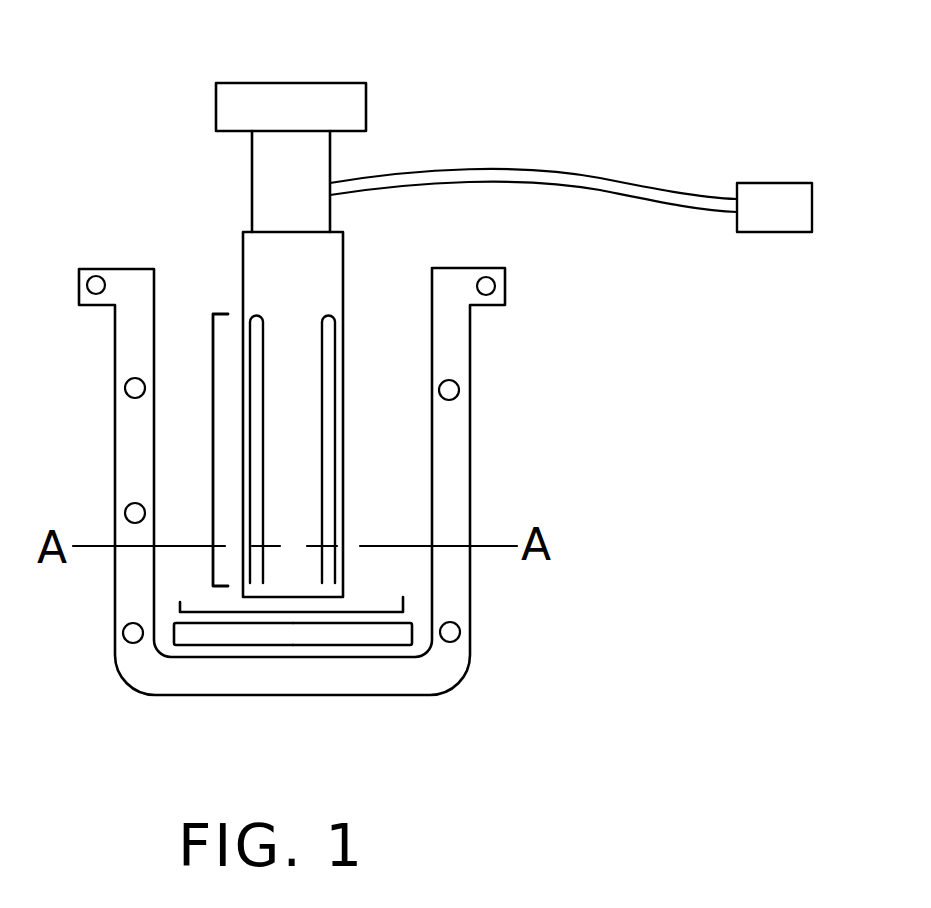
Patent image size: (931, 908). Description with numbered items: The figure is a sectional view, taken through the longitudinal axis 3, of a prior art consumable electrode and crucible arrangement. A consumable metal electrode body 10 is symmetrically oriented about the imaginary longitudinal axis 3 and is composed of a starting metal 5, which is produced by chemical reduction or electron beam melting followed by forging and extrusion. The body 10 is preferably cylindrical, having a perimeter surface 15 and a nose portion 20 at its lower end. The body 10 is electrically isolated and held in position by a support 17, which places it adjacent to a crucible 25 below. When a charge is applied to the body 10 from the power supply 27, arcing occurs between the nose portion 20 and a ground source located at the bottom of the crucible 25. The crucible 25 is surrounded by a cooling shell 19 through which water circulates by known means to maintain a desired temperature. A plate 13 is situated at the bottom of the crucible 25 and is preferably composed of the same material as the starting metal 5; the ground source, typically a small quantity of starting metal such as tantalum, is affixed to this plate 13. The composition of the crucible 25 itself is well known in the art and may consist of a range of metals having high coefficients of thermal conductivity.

The longitudinal axis 3 is at (293, 623).
The starting metal 5 is at (256, 246).
The consumable metal electrode body 10 is at (330, 162).
The plate 13 is at (395, 636).
The perimeter surface 15 is at (212, 472).
The support 17 is at (325, 92).
The cooling shell 19 is at (465, 420).
The nose portion 20 is at (208, 614).
The crucible 25 is at (457, 592).
The power supply 27 is at (792, 223).